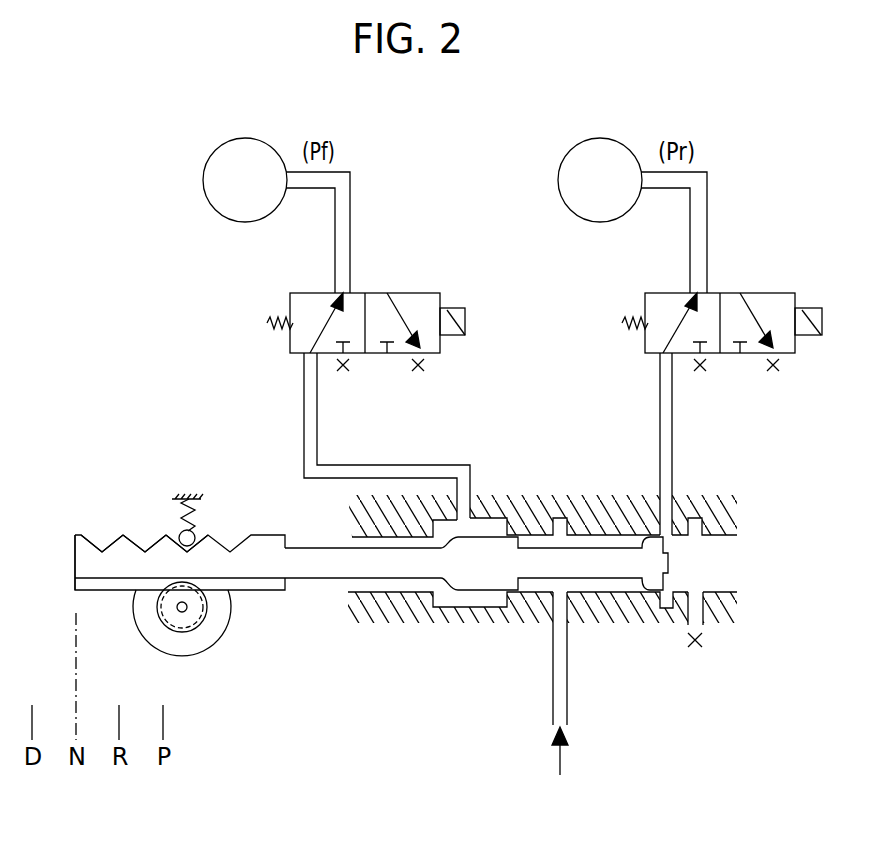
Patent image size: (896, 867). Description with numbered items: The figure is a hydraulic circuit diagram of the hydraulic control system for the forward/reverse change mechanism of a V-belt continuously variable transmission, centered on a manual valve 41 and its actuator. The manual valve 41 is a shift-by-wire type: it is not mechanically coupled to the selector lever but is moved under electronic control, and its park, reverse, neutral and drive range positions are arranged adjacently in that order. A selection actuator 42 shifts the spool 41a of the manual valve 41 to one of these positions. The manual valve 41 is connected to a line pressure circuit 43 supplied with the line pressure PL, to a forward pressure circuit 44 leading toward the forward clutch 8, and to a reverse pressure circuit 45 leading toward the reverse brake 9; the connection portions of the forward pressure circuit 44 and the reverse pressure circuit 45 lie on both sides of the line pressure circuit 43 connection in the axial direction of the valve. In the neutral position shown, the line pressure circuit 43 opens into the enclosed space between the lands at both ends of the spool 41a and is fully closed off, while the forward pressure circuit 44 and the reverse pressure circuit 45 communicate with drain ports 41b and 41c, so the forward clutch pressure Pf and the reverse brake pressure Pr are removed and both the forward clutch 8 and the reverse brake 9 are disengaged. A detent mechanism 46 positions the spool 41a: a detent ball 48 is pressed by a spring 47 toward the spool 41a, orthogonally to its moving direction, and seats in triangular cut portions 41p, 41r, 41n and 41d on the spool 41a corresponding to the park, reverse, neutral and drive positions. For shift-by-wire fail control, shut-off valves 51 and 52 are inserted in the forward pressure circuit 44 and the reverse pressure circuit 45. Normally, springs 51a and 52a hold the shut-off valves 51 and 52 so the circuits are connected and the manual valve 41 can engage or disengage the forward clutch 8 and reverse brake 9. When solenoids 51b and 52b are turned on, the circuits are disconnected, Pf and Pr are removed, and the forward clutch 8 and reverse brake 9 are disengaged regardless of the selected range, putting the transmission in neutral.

The forward clutch 8 is at (203, 164).
The reverse brake 9 is at (558, 164).
The manual valve 41 is at (450, 639).
The spool 41a is at (512, 549).
The drain port 41b is at (350, 587).
The drain port 41c is at (697, 608).
The triangular cut portion 41d is at (247, 535).
The triangular cut portion 41n is at (175, 547).
The triangular cut portion 41p is at (93, 540).
The triangular cut portion 41r is at (125, 535).
The selection actuator 42 is at (215, 643).
The line pressure circuit 43 is at (553, 670).
The forward pressure circuit 44 is at (335, 265).
The reverse pressure circuit 45 is at (690, 265).
The detent mechanism 46 is at (85, 505).
The spring 47 is at (197, 505).
The detent ball 48 is at (194, 533).
The shut-off valve 51 is at (406, 289).
The spring 51a is at (266, 329).
The solenoid 51b is at (453, 308).
The shut-off valve 52 is at (763, 289).
The spring 52a is at (626, 329).
The solenoid 52b is at (810, 308).